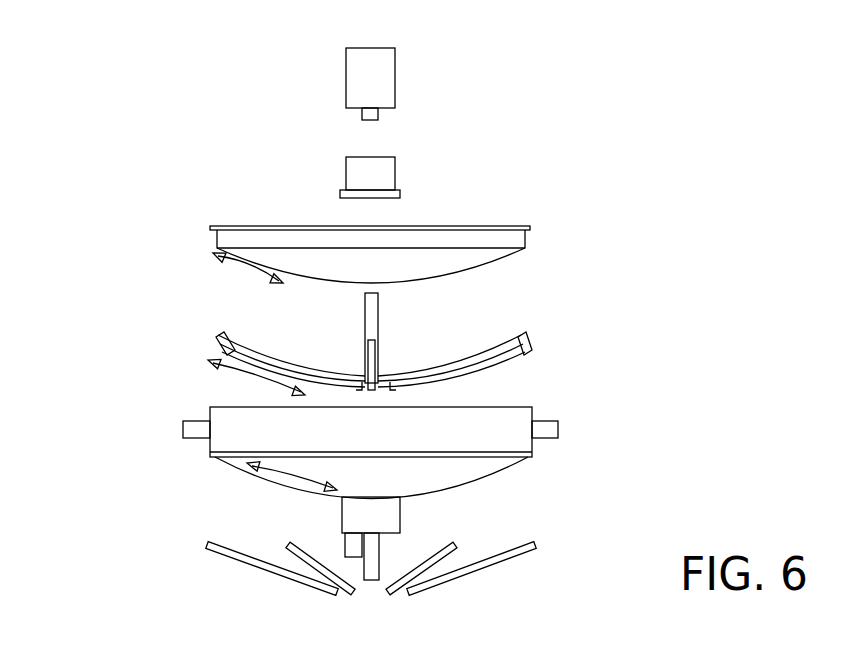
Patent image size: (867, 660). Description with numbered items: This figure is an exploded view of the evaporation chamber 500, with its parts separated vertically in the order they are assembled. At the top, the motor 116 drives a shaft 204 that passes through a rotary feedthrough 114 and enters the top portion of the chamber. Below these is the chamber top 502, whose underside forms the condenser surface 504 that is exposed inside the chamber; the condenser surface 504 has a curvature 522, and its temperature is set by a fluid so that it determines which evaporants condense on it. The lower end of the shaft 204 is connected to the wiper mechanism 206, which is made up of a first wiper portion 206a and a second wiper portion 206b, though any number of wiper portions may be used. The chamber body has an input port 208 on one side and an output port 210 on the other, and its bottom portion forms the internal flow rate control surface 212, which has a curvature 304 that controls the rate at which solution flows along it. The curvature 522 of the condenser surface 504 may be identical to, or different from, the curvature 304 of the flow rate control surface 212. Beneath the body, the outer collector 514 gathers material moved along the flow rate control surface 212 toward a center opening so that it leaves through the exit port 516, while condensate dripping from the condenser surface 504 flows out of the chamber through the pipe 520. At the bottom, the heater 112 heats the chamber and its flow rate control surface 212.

The evaporation chamber 500 is at (108, 247).
The motor 116 is at (346, 72).
The rotary feedthrough 114 is at (346, 173).
The chamber top 502 is at (228, 227).
The condenser surface 504 is at (500, 267).
The curvature 522 is at (236, 276).
The shaft 204 is at (365, 323).
The wiper mechanism 206 is at (232, 353).
The first wiper portion 206a is at (272, 362).
The second wiper portion 206b is at (474, 360).
The curvature 304 is at (233, 379).
The input port 208 is at (183, 430).
The output port 210 is at (558, 428).
The internal flow rate control surface 212 is at (476, 472).
The outer collector 514 is at (400, 508).
The exit port 516 is at (347, 545).
The pipe 520 is at (381, 558).
The heater 112 is at (513, 557).